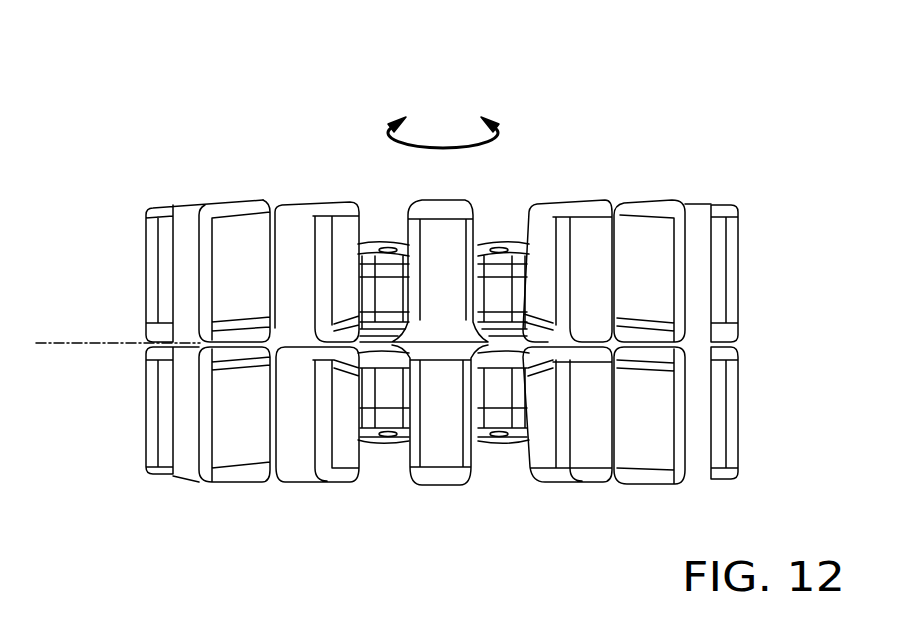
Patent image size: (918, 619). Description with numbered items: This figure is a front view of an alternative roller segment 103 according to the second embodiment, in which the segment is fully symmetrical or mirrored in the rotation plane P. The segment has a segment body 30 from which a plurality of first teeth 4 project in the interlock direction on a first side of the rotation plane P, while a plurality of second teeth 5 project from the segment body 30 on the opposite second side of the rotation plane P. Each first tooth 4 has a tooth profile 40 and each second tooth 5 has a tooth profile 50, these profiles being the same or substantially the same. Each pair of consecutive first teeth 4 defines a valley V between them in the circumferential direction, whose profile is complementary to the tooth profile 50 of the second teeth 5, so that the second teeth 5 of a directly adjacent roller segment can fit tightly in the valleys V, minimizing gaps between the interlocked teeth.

The roller segment 103 is at (122, 112).
The second teeth 5 is at (297, 200).
The first teeth 4 is at (302, 460).
The tooth profile 40 is at (433, 452).
The tooth profile 50 is at (392, 208).
The segment body 30 is at (498, 265).
The valley V is at (371, 210).
The rotation plane P is at (107, 336).